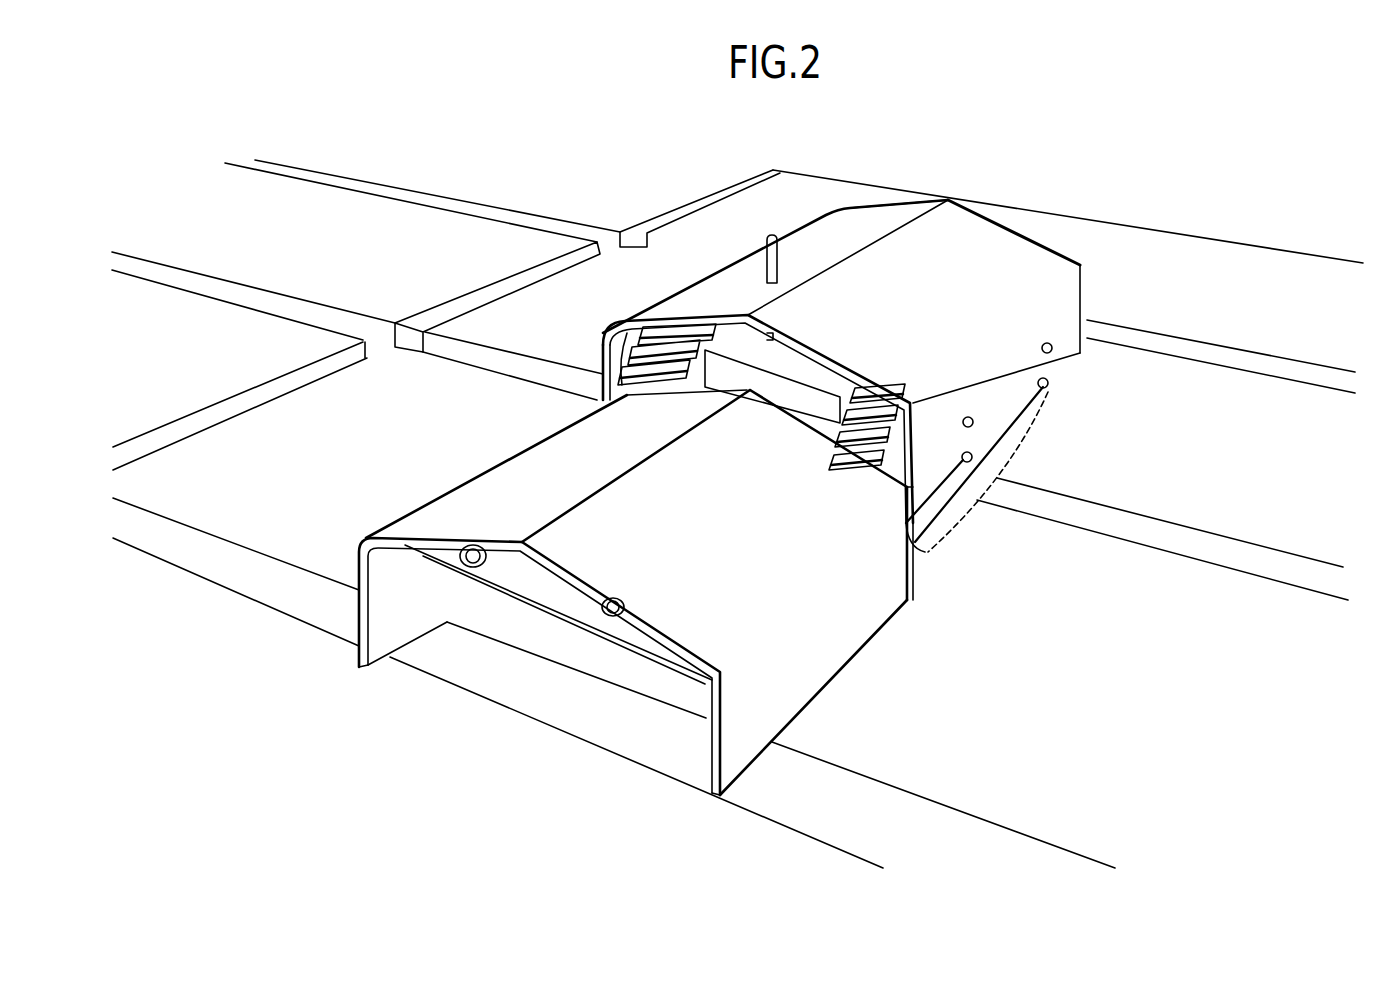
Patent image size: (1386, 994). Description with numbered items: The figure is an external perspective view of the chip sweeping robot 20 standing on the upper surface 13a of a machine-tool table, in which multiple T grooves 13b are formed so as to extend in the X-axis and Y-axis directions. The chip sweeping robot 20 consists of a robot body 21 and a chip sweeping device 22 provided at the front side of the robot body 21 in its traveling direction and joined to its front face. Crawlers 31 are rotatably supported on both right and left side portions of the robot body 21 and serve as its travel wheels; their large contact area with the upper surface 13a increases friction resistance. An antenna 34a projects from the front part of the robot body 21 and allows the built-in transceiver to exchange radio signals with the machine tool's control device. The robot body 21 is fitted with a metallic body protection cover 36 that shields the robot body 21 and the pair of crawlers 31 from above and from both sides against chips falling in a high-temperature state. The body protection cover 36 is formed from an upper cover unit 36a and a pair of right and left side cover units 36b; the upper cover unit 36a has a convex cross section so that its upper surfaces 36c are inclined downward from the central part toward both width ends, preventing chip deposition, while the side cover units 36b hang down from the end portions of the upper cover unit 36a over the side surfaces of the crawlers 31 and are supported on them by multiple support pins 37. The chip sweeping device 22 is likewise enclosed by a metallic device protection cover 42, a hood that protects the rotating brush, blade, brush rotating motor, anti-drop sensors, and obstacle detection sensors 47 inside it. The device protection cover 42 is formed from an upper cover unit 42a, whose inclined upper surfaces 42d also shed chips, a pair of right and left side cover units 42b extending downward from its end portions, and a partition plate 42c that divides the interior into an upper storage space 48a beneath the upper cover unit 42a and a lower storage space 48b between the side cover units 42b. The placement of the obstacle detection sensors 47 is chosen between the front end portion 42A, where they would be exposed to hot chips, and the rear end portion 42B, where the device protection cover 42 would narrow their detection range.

The upper surface 13a is at (440, 230).
The T grooves 13b is at (550, 270).
The chip sweeping robot 20 is at (1043, 648).
The robot body 21 is at (817, 370).
The chip sweeping device 22 is at (826, 702).
The crawlers 31 is at (643, 347).
The antenna 34a is at (780, 266).
The body protection cover 36 is at (1044, 236).
The upper cover unit 36a is at (1050, 262).
The side cover units 36b is at (1087, 285).
The upper surfaces 36c is at (957, 213).
The support pins 37 is at (950, 472).
The device protection cover 42 is at (427, 498).
The upper cover unit 42a is at (417, 520).
The side cover units 42b is at (353, 630).
The partition plate 42c is at (543, 593).
The upper surfaces 42d is at (673, 468).
The front end portion 42A is at (360, 673).
The rear end portion 42B is at (907, 583).
The obstacle detection sensors 47 is at (467, 567).
The upper storage space 48a is at (533, 572).
The lower storage space 48b is at (710, 747).